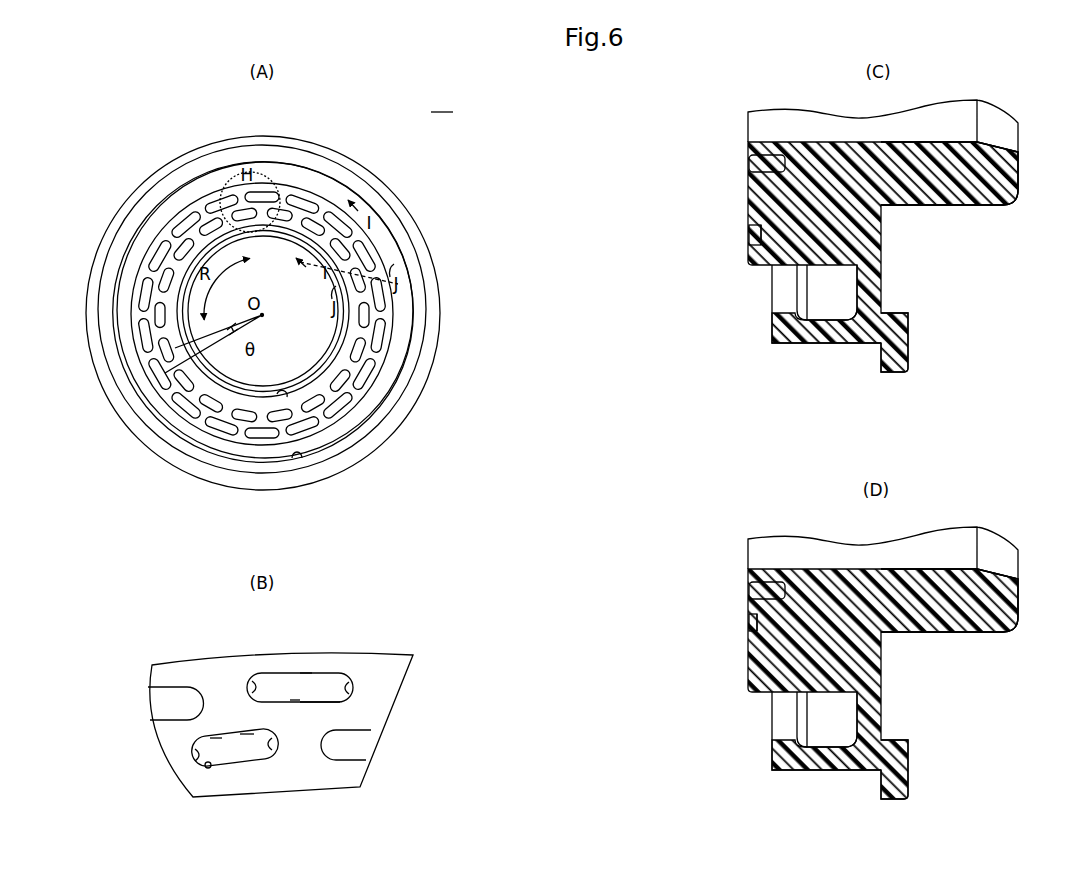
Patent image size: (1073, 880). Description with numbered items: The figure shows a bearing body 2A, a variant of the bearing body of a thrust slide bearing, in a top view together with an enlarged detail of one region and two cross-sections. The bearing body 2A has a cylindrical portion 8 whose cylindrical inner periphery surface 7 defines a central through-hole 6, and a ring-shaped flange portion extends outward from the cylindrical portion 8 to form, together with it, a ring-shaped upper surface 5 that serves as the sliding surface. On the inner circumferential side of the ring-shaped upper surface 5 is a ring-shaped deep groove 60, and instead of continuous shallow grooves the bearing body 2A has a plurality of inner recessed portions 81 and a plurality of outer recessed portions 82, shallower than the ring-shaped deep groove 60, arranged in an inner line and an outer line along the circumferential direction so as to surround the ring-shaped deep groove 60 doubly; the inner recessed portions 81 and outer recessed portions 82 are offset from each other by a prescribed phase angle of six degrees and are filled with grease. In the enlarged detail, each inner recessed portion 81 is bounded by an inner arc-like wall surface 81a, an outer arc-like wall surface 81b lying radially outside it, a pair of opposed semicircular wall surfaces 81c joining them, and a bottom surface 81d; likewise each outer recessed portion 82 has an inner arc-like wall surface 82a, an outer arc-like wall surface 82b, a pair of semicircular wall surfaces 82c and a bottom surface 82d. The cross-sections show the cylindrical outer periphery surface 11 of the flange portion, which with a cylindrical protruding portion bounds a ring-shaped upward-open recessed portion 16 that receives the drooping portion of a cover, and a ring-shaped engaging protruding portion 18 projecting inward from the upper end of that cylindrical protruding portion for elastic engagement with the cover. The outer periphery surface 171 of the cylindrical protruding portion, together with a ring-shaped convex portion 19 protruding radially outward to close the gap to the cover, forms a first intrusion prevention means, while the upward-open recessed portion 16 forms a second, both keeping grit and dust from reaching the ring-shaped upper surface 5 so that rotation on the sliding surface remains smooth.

The bearing body 2A is at (442, 104).
The ring-shaped upper surface 5 is at (379, 661).
The through-hole 6 is at (246, 381).
The cylindrical inner periphery surface 7 is at (303, 248).
The cylindrical portion 8 is at (975, 206).
The cylindrical outer periphery surface 11 is at (309, 187).
The upward-open recessed portion 16 is at (388, 251).
The engaging protruding portion 18 is at (297, 459).
The ring-shaped convex portion 19 is at (440, 327).
The ring-shaped deep groove 60 is at (283, 397).
The inner recessed portion 81 is at (360, 353).
The inner arc-like wall surface 81a is at (208, 769).
The outer arc-like wall surface 81b is at (215, 737).
The semicircular wall surface 81c is at (194, 755).
The bottom surface 81d is at (247, 738).
The outer recessed portion 82 is at (369, 378).
The inner arc-like wall surface 82a is at (298, 698).
The outer arc-like wall surface 82b is at (308, 672).
The semicircular wall surface 82c is at (258, 681).
The bottom surface 82d is at (328, 702).
The outer periphery surface 171 is at (368, 451).